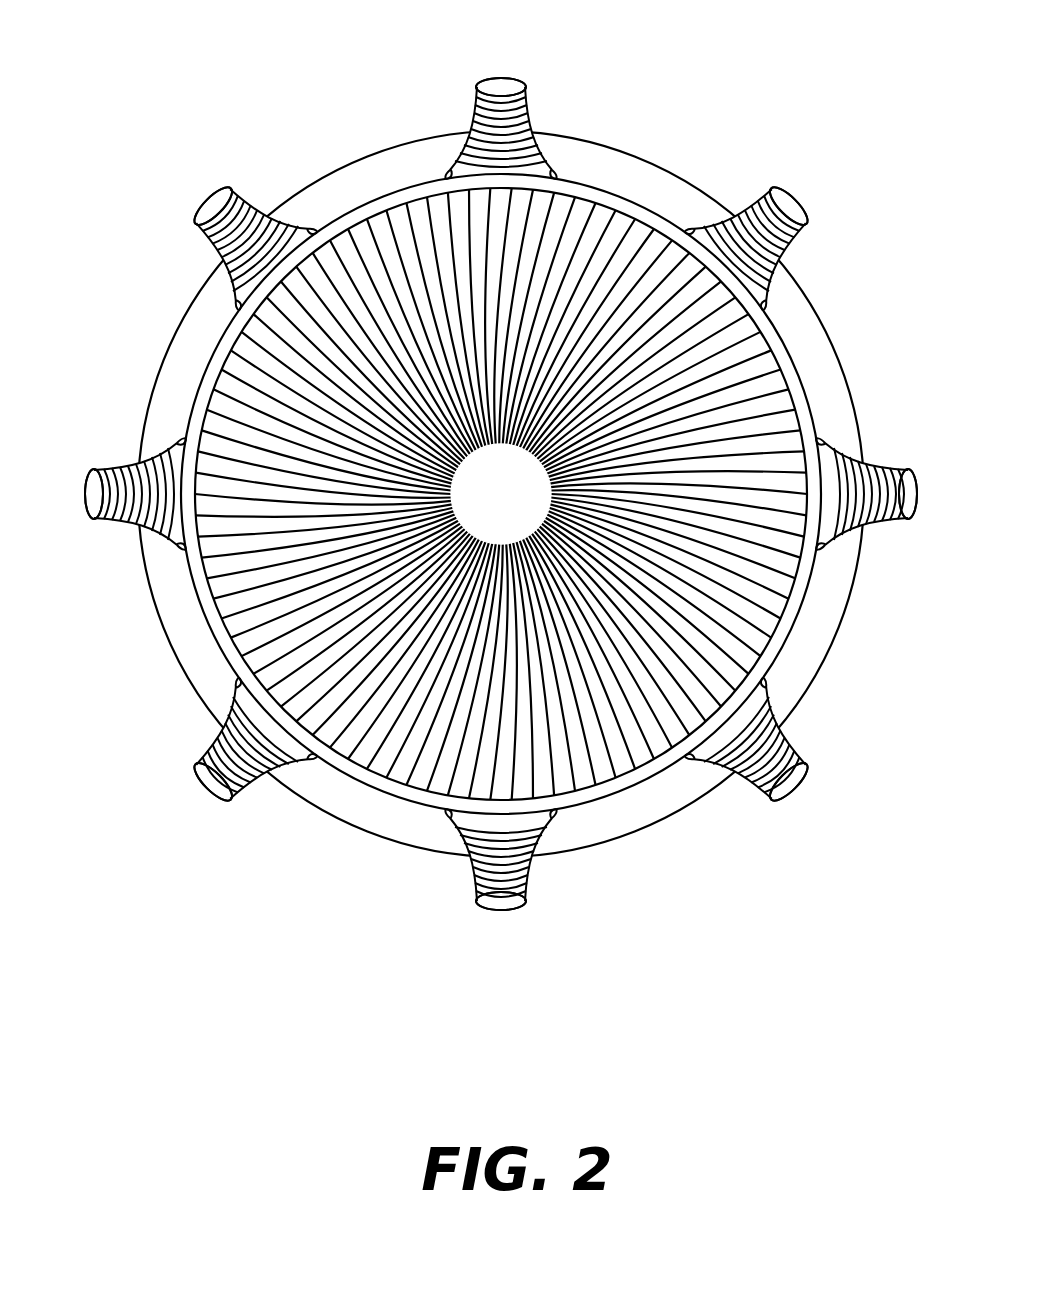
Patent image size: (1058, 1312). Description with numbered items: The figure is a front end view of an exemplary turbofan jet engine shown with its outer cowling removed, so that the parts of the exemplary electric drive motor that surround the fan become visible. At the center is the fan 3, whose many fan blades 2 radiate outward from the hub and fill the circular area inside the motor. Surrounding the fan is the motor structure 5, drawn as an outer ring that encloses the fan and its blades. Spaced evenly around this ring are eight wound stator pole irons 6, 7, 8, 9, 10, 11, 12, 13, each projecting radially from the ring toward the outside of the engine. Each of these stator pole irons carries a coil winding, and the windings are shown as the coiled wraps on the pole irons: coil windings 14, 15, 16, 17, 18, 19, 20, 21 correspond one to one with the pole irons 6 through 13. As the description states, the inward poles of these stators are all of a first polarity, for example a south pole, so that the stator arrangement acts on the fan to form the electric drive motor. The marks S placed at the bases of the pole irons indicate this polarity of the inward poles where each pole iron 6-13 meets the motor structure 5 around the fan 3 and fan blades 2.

The fan blades 2 is at (615, 266).
The fan 3 is at (515, 505).
The motor structure 5 is at (815, 318).
The wound stator pole iron 6 is at (500, 112).
The wound stator pole iron 7 is at (760, 236).
The wound stator pole iron 8 is at (879, 493).
The wound stator pole iron 9 is at (760, 753).
The wound stator pole iron 10 is at (500, 877).
The wound stator pole iron 11 is at (243, 753).
The wound stator pole iron 12 is at (120, 493).
The wound stator pole iron 13 is at (243, 236).
The coil winding 14 is at (538, 108).
The coil winding 15 is at (812, 214).
The coil winding 16 is at (882, 517).
The coil winding 17 is at (798, 800).
The coil winding 18 is at (468, 876).
The coil winding 19 is at (210, 772).
The coil winding 20 is at (120, 458).
The coil winding 21 is at (262, 190).
The slot at nozzle base S is at (446, 168).